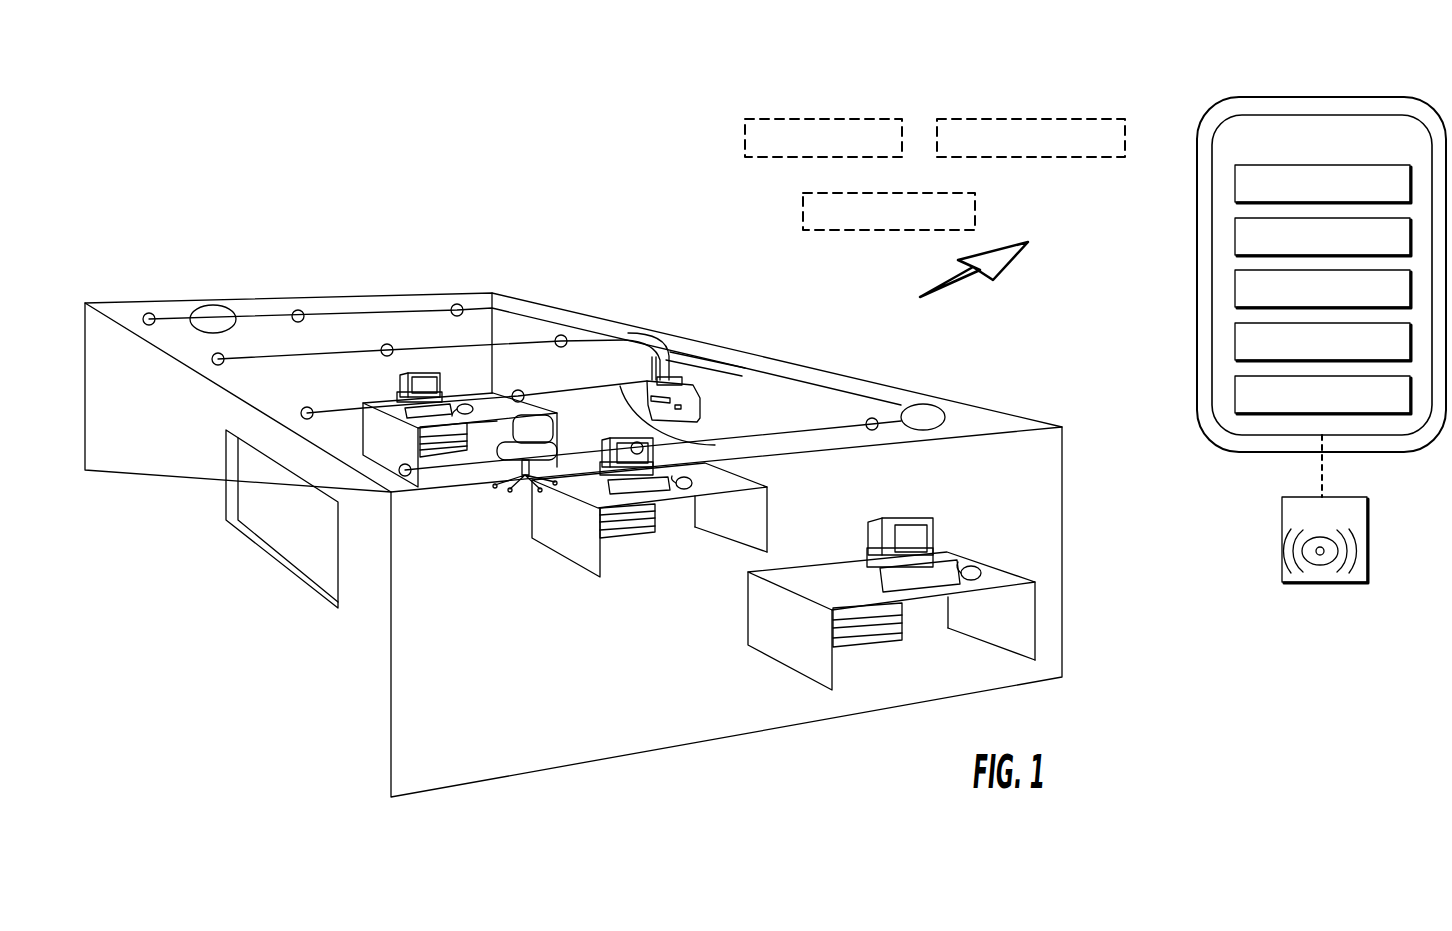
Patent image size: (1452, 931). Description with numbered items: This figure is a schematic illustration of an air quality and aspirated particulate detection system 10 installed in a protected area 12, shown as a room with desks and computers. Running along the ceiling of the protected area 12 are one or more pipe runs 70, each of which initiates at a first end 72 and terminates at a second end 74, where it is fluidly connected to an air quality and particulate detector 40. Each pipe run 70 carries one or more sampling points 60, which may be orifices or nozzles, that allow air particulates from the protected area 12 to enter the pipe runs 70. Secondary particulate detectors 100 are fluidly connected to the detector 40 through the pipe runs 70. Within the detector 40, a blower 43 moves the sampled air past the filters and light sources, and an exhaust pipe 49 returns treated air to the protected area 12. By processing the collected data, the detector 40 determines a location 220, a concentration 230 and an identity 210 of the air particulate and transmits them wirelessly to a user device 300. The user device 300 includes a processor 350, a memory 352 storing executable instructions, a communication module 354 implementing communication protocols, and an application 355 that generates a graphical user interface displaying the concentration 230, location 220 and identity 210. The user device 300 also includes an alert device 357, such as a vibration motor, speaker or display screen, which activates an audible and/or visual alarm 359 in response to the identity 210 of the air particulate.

The air quality and aspirated particulate detection system 10 is at (160, 145).
The protected area 12 is at (390, 635).
The air quality and particulate detector 40 is at (702, 398).
The blower 43 is at (700, 408).
The exhaust pipe 49 is at (640, 344).
The sampling point 60 is at (874, 418).
The pipe run 70 is at (418, 346).
The first end 72 is at (309, 407).
The second end 74 is at (683, 381).
The secondary particulate detector 100 is at (217, 306).
The identity 210 is at (810, 207).
The location 220 is at (805, 118).
The concentration 230 is at (1028, 118).
The user device 300 is at (1289, 314).
The processor 350 is at (1242, 237).
The memory 352 is at (1242, 178).
The communication module 354 is at (1237, 302).
The application 355 is at (1237, 353).
The alert device 357 is at (1237, 405).
The alarm 359 is at (1300, 583).